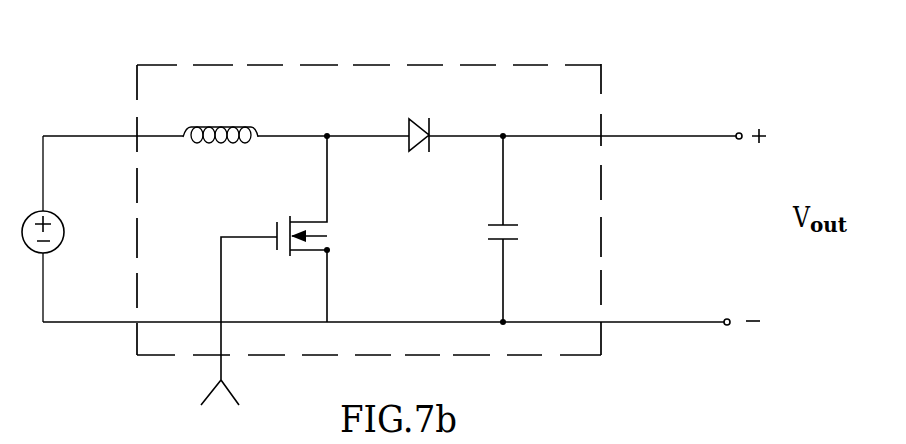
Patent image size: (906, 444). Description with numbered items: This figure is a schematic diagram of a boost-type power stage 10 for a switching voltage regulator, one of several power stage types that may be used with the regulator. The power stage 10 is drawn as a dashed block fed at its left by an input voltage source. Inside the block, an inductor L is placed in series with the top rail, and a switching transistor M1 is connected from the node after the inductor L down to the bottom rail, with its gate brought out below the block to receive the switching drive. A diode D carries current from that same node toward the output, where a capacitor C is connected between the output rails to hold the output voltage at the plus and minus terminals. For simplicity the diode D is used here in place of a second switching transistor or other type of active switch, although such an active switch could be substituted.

The power stage 10 is at (202, 66).
The inductor L is at (220, 119).
The diode D is at (430, 124).
The switching transistor M1 is at (283, 270).
The capacitor C is at (517, 229).